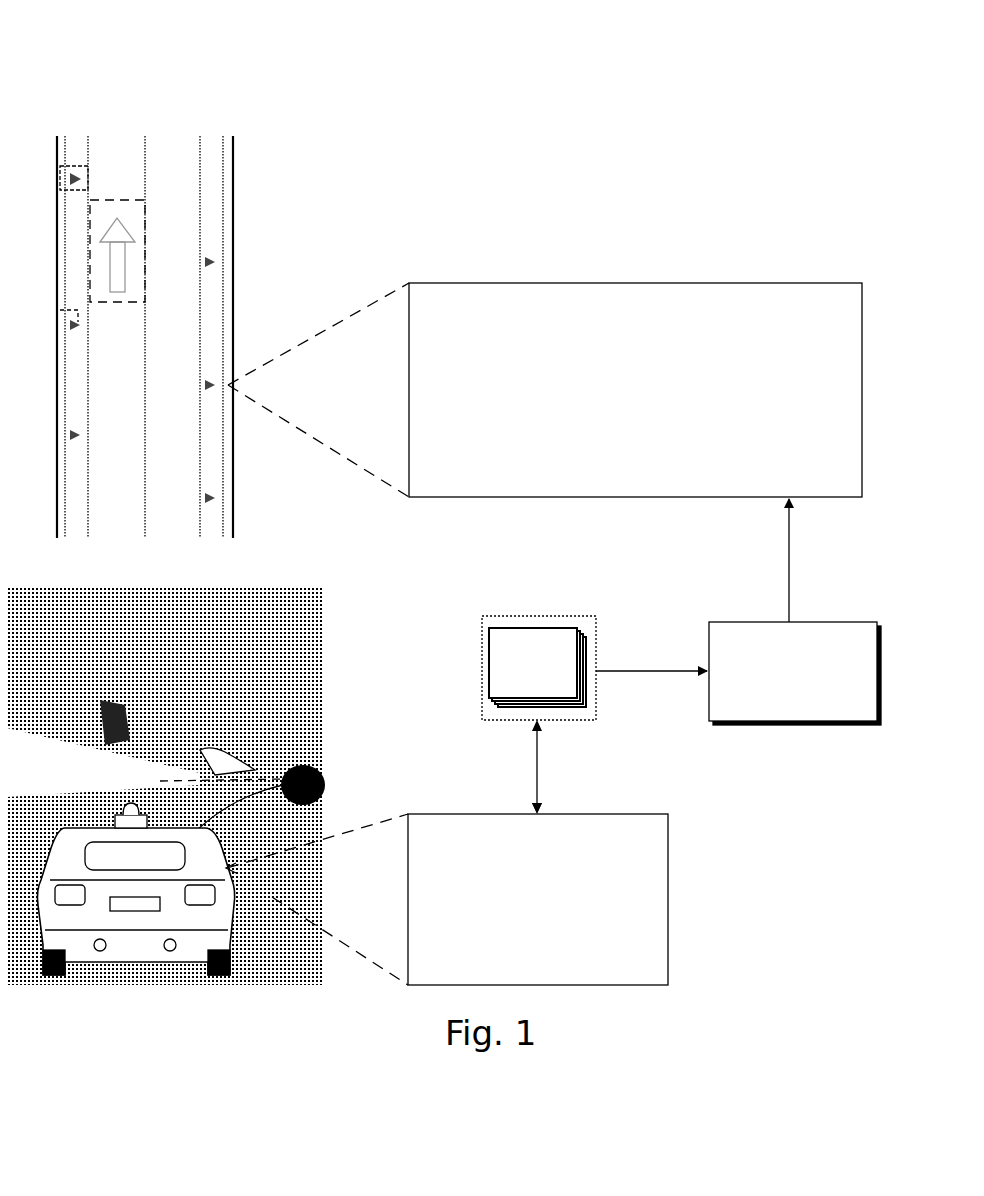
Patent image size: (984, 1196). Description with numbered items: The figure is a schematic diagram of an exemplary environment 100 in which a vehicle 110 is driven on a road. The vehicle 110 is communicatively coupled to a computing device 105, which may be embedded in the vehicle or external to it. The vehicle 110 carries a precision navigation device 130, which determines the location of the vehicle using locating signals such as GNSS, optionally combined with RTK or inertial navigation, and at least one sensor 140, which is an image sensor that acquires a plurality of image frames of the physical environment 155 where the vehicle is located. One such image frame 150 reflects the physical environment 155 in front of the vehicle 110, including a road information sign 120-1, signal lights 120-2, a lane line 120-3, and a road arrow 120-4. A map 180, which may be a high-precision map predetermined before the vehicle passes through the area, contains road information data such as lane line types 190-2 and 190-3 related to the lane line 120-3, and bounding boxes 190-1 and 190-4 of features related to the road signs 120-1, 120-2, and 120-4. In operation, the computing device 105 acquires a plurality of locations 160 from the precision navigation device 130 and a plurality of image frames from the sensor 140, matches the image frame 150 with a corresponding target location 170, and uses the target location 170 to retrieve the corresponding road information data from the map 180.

The environment 100 is at (158, 48).
The computing device 105 is at (323, 776).
The vehicle 110 is at (232, 900).
The road information sign 120-1 is at (118, 702).
The signal lights 120-2 is at (212, 760).
The lane line 120-3 is at (312, 962).
The road arrow 120-4 is at (322, 803).
The precision navigation device 130 is at (112, 825).
The sensor 140 is at (192, 838).
The image frame 150 is at (668, 875).
The physical environment 155 is at (248, 588).
The locations 160 is at (558, 616).
The target location 170 is at (845, 622).
The map 180 is at (622, 283).
The bounding box 190-1 is at (63, 167).
The lane line type 190-2 is at (58, 515).
The lane line type 190-3 is at (145, 388).
The bounding box 190-4 is at (118, 200).